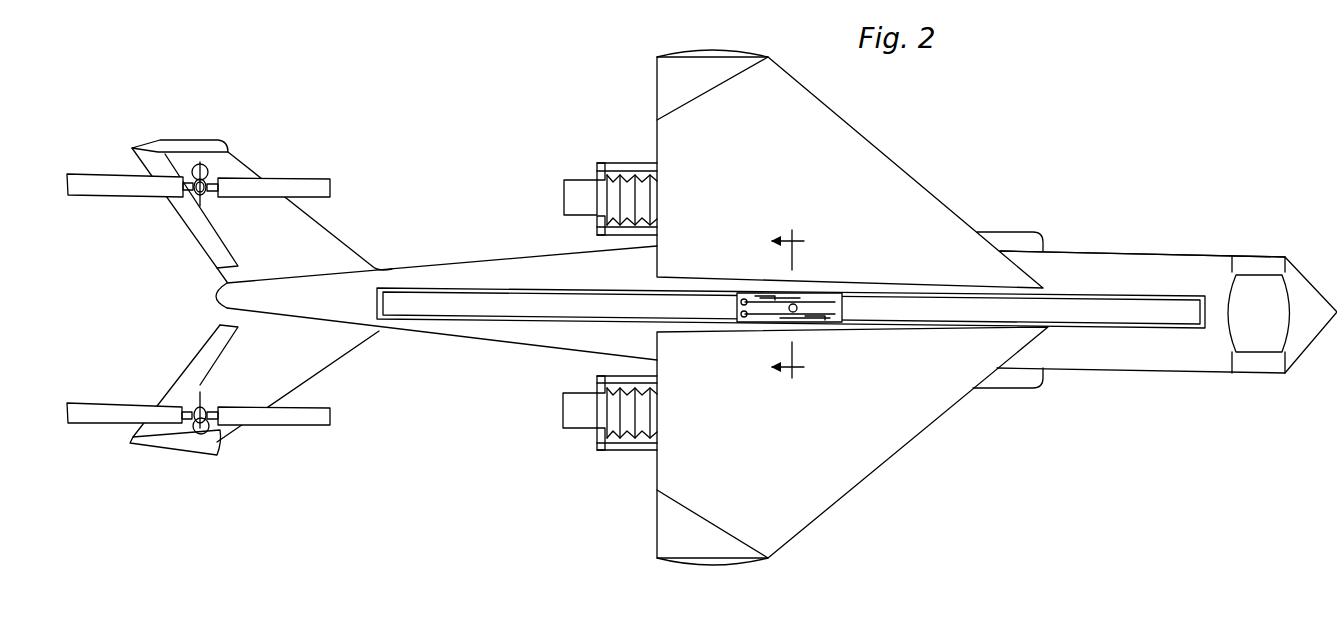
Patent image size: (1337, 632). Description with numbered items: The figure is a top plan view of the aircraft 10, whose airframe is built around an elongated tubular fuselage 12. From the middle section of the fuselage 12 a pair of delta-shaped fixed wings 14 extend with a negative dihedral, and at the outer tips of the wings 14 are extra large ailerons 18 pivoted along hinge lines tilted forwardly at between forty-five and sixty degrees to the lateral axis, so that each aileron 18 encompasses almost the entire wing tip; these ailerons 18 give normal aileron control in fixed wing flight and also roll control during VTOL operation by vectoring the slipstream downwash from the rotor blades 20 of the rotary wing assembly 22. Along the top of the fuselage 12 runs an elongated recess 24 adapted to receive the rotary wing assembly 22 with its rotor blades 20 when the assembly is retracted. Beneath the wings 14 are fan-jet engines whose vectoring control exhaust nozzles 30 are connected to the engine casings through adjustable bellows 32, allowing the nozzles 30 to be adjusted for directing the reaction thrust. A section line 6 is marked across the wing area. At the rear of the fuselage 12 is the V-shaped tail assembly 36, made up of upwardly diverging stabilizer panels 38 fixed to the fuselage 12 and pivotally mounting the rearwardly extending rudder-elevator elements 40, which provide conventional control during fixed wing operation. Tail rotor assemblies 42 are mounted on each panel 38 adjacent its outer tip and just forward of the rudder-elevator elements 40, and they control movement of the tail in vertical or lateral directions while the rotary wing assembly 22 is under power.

The section line 6- 6 is at (772, 304).
The aircraft 10 is at (1158, 245).
The fuselage 12 is at (1096, 372).
The fixed wings 14 is at (853, 156).
The ailerons 18 is at (675, 88).
The rotor blades 20 is at (470, 302).
The rotary wing assembly 22 is at (812, 290).
The elongated recess 24 is at (521, 290).
The exhaust nozzles 30 is at (584, 193).
The adjustable bellows 32 is at (618, 167).
The tail assembly 36 is at (332, 163).
The stabilizer panels 38 is at (322, 246).
The rudder-elevator elements 40 is at (197, 220).
The tail rotor assemblies 42 is at (285, 176).